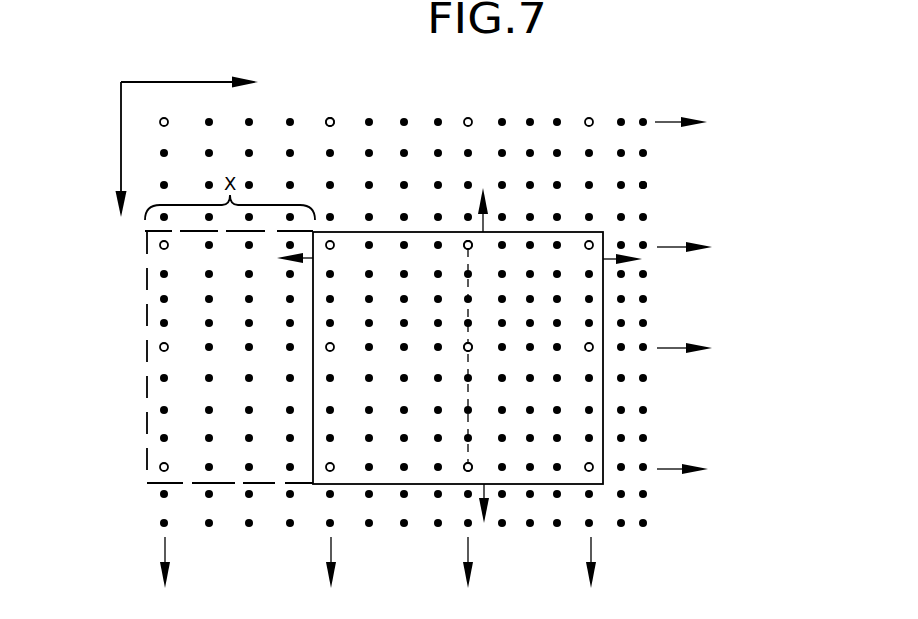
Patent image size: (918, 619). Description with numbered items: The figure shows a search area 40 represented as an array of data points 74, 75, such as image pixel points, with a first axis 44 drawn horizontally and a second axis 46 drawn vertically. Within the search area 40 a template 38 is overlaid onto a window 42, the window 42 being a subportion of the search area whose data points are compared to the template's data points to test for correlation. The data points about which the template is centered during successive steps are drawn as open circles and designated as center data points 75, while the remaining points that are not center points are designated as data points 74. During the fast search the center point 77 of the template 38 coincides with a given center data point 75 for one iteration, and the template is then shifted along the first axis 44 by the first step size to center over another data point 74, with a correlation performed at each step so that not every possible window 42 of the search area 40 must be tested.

The search area 40 is at (660, 80).
The first axis 44 is at (163, 82).
The second axis 46 is at (121, 132).
The center data point 75 is at (334, 117).
The data point 74 is at (647, 185).
The template 38 is at (511, 355).
The window 42 is at (603, 313).
The center point of template 77 is at (470, 352).